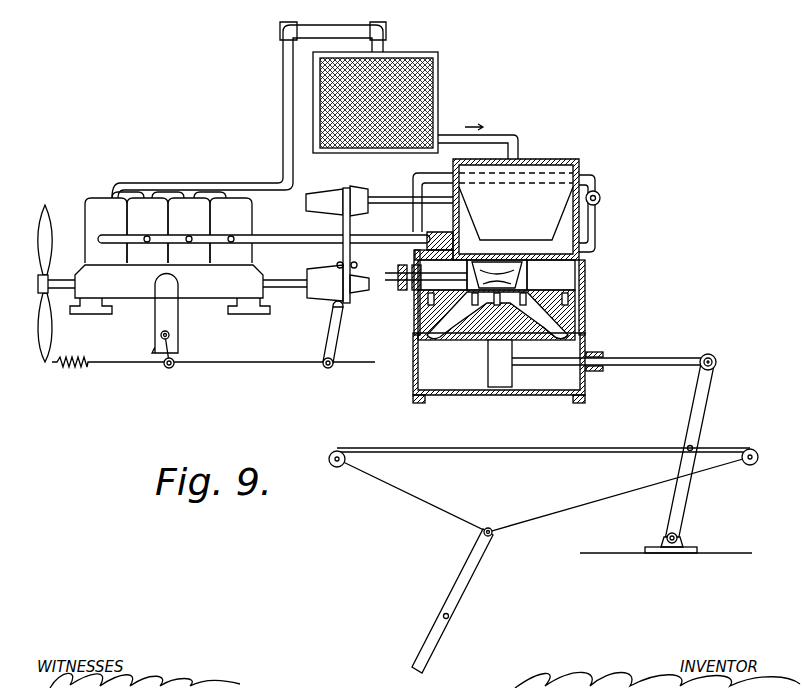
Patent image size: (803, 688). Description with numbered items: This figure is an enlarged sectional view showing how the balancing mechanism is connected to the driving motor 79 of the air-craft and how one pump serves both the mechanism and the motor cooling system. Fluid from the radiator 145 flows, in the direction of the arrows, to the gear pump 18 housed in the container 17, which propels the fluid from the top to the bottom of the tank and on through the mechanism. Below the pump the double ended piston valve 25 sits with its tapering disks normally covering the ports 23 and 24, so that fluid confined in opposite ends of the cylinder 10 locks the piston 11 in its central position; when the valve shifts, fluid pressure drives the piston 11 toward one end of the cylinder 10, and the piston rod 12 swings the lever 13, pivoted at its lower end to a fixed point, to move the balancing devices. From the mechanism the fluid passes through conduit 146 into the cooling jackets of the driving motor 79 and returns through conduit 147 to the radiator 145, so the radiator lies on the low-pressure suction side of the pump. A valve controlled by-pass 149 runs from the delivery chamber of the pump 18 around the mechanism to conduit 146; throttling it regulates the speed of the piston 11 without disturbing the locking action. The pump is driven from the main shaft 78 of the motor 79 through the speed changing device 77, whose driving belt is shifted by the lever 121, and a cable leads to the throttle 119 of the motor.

The cylinder 10 is at (465, 390).
The piston 11 is at (497, 375).
The piston rod 12 is at (639, 363).
The lever 13 is at (700, 411).
The container 17 is at (580, 221).
The gear pump 18 is at (538, 190).
The port 23 is at (418, 330).
The port 24 is at (582, 328).
The double ended piston valve 25 is at (529, 271).
The speed changing device 77 is at (345, 203).
The main shaft 78 is at (293, 291).
The driving motor 79 is at (170, 253).
The throttle 119 is at (149, 321).
The lever 121 is at (338, 333).
The radiator 145 is at (438, 94).
The conduit 146 is at (278, 236).
The conduit 147 is at (283, 127).
The by-pass 149 is at (600, 185).